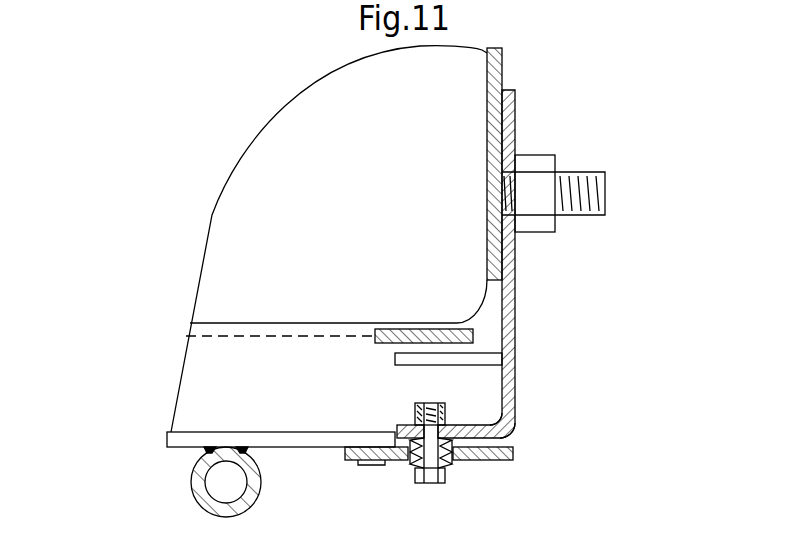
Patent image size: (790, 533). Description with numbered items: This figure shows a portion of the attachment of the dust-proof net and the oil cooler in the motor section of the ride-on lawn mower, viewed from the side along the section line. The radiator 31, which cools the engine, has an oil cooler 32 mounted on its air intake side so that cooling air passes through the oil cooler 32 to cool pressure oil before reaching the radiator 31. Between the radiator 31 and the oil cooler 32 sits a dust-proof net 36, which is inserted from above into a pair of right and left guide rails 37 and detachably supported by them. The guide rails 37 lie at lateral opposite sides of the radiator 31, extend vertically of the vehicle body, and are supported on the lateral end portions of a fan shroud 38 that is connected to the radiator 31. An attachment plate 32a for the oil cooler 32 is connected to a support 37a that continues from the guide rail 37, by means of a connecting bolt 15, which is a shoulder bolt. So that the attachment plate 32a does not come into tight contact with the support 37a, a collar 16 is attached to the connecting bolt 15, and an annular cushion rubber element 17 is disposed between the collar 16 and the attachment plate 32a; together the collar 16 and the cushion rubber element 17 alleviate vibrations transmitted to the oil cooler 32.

The radiator 31 is at (257, 207).
The oil cooler 32 is at (193, 495).
The attachment plate 32a is at (513, 455).
The dust-proof net 36 is at (223, 337).
The guide rail 37 is at (407, 365).
The support 37a is at (478, 423).
The fan shroud 38 is at (500, 72).
The connecting bolt 15 is at (427, 478).
The collar 16 is at (448, 468).
The annular cushion rubber element 17 is at (412, 465).